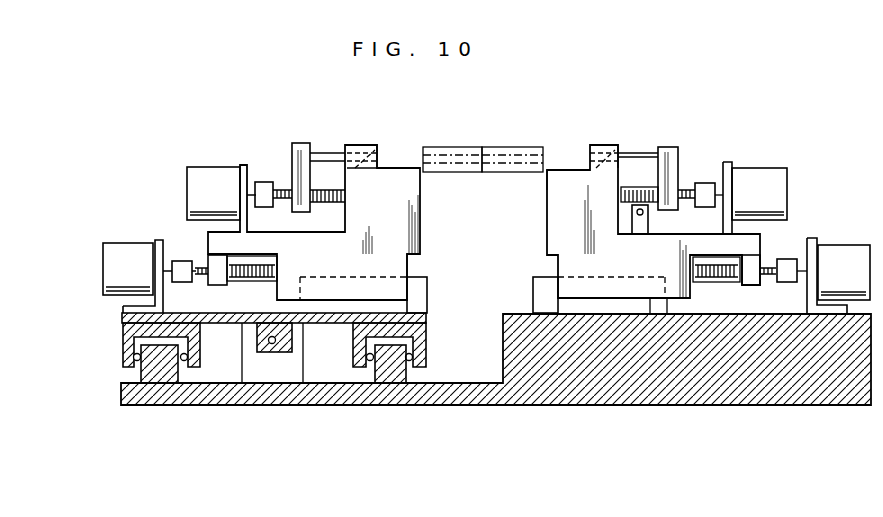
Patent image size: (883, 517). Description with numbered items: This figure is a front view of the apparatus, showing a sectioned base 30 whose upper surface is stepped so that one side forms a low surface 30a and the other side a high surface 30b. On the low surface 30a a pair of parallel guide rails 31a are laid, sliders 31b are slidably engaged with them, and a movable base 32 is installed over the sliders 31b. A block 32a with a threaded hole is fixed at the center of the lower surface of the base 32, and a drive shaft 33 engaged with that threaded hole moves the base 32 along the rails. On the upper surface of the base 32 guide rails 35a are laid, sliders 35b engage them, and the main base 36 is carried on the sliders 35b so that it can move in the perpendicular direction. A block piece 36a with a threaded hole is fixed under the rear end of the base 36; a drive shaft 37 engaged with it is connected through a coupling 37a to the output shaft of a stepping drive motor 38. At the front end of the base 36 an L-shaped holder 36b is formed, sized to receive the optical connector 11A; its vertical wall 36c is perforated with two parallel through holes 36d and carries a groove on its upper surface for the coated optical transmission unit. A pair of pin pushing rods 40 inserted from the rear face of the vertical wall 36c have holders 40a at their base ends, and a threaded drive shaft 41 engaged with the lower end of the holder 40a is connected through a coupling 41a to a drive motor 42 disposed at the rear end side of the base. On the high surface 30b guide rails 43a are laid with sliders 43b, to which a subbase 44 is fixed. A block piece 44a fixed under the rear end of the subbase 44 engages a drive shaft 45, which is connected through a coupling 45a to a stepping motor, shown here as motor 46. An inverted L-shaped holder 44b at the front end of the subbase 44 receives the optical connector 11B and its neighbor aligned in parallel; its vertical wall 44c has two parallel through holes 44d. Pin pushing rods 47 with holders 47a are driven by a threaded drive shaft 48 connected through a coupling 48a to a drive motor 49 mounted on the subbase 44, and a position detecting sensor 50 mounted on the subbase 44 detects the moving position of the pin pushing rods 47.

The optical connector 11A is at (475, 148).
The optical connector 11B is at (500, 148).
The base 30 is at (488, 404).
The low surface 30a is at (338, 392).
The high surface 30b is at (580, 406).
The guide rails 31a is at (153, 393).
The sliders 31b is at (124, 343).
The movable base 32 is at (122, 317).
The block 32a is at (257, 354).
The drive shaft 33 is at (275, 344).
The guide rails 35a is at (420, 284).
The sliders 35b is at (410, 262).
The base 36 is at (421, 184).
The block piece 36a is at (210, 257).
The L-shaped holder 36b is at (386, 170).
The vertical wall 36c is at (357, 147).
The through holes 36d is at (372, 160).
The drive shaft 37 is at (248, 283).
The coupling 37a is at (179, 284).
The drive motor 38 is at (116, 250).
The pin pushing rods 40 is at (320, 150).
The holders 40a is at (300, 145).
The drive shaft 41 is at (322, 204).
The coupling 41a is at (264, 180).
The drive motor 42 is at (208, 178).
The guide rails 43a is at (623, 305).
The sliders 43b is at (678, 300).
The subbase 44 is at (546, 213).
The block piece 44a is at (766, 262).
The inverted L-shaped holder 44b is at (546, 170).
The vertical wall 44c is at (596, 145).
The through holes 44d is at (612, 150).
The drive shaft 45 is at (713, 283).
The coupling 45a is at (787, 284).
The motor 46 is at (843, 246).
The pin pushing rods 47 is at (646, 152).
The holders 47a is at (668, 150).
The drive shaft 48 is at (628, 194).
The coupling 48a is at (705, 184).
The drive motor 49 is at (780, 172).
The position detecting sensor 50 is at (640, 236).